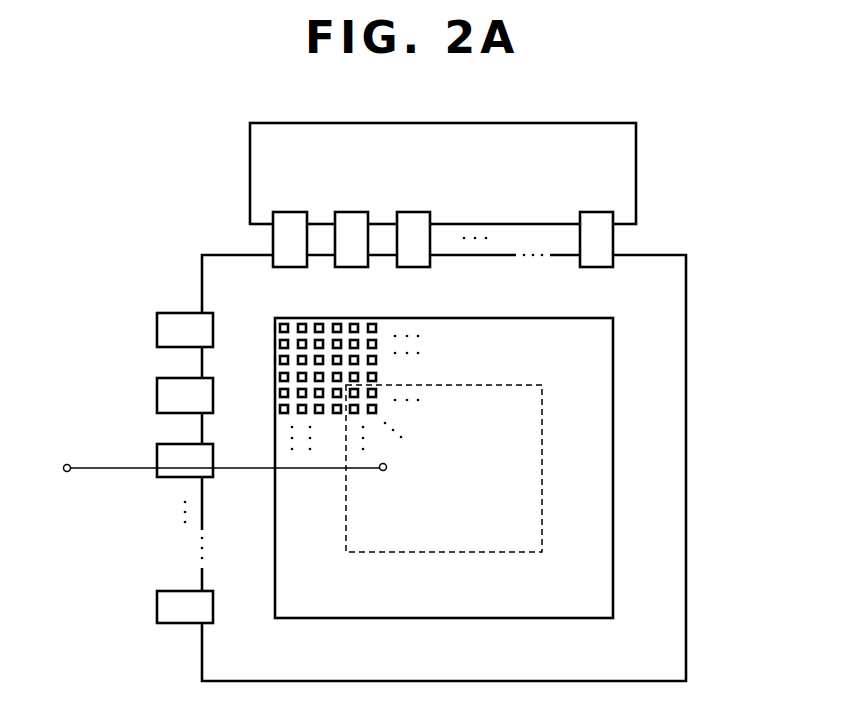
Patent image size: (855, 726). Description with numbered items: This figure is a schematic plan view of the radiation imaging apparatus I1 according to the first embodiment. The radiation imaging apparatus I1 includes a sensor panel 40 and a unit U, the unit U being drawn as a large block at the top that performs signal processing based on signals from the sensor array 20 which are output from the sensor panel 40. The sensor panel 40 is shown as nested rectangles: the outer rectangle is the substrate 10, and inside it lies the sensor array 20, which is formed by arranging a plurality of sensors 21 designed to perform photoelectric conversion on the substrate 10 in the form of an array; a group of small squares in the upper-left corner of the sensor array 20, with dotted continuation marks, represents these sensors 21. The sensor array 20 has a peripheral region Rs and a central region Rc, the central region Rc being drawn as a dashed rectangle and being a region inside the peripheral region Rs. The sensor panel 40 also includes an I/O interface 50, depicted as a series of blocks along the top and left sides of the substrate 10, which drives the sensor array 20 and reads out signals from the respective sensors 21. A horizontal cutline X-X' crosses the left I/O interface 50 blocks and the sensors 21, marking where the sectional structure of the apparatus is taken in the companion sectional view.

The substrate 10 is at (686, 287).
The sensor array 20 is at (613, 344).
The sensors 21 is at (275, 328).
The sensor panel 40 is at (740, 273).
The I/O interface 50 is at (273, 242).
The unit U is at (250, 160).
The radiation imaging apparatus I1 is at (90, 164).
The peripheral region Rs is at (585, 428).
The central region Rc is at (512, 495).
The cutline X-X' X is at (227, 485).